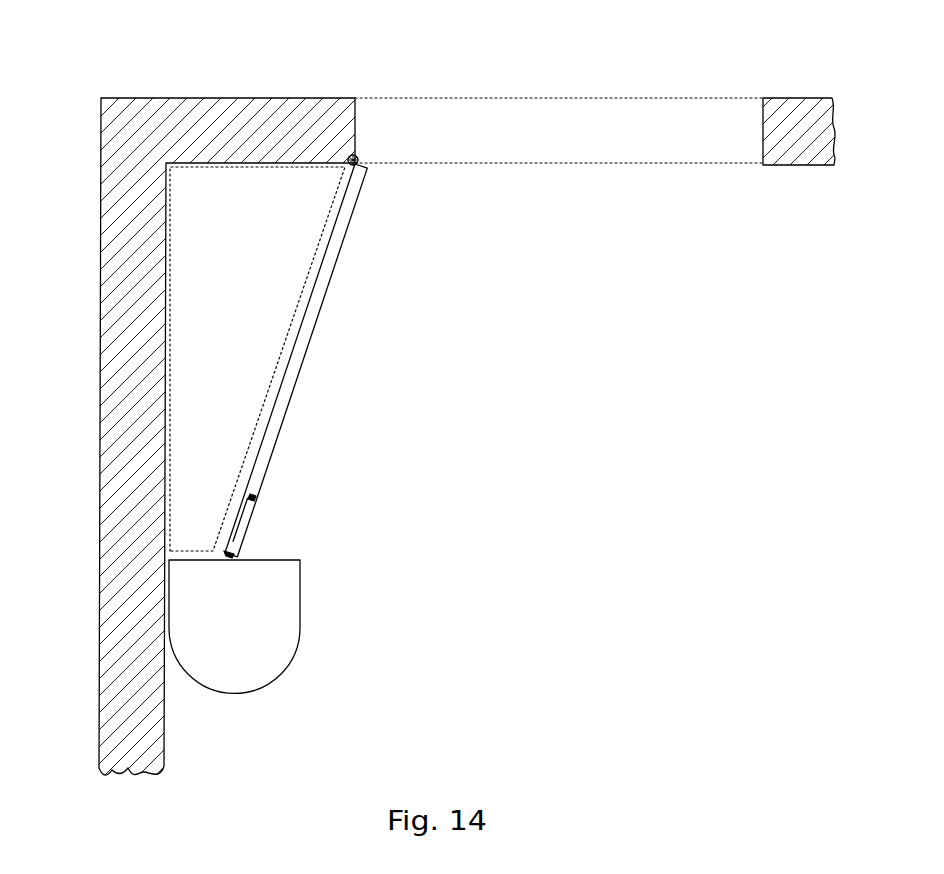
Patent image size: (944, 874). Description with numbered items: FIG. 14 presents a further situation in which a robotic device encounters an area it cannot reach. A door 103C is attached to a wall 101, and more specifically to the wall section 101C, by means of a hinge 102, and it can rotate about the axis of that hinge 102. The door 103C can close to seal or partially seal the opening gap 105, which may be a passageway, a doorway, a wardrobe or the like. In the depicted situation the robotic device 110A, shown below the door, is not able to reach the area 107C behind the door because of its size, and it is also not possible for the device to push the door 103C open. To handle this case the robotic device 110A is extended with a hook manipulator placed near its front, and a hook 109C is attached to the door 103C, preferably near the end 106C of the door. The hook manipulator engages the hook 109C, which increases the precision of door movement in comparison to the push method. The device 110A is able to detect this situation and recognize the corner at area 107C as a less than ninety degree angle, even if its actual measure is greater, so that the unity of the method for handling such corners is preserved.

The wall 101 is at (799, 129).
The wall 101C is at (248, 122).
The hinge 102 is at (357, 157).
The door 103C is at (302, 329).
The opening gap 105 is at (534, 128).
The end of the door 106C is at (229, 551).
The unreachable area 107C is at (294, 197).
The hook 109C is at (253, 497).
The robotic device 110A is at (262, 648).